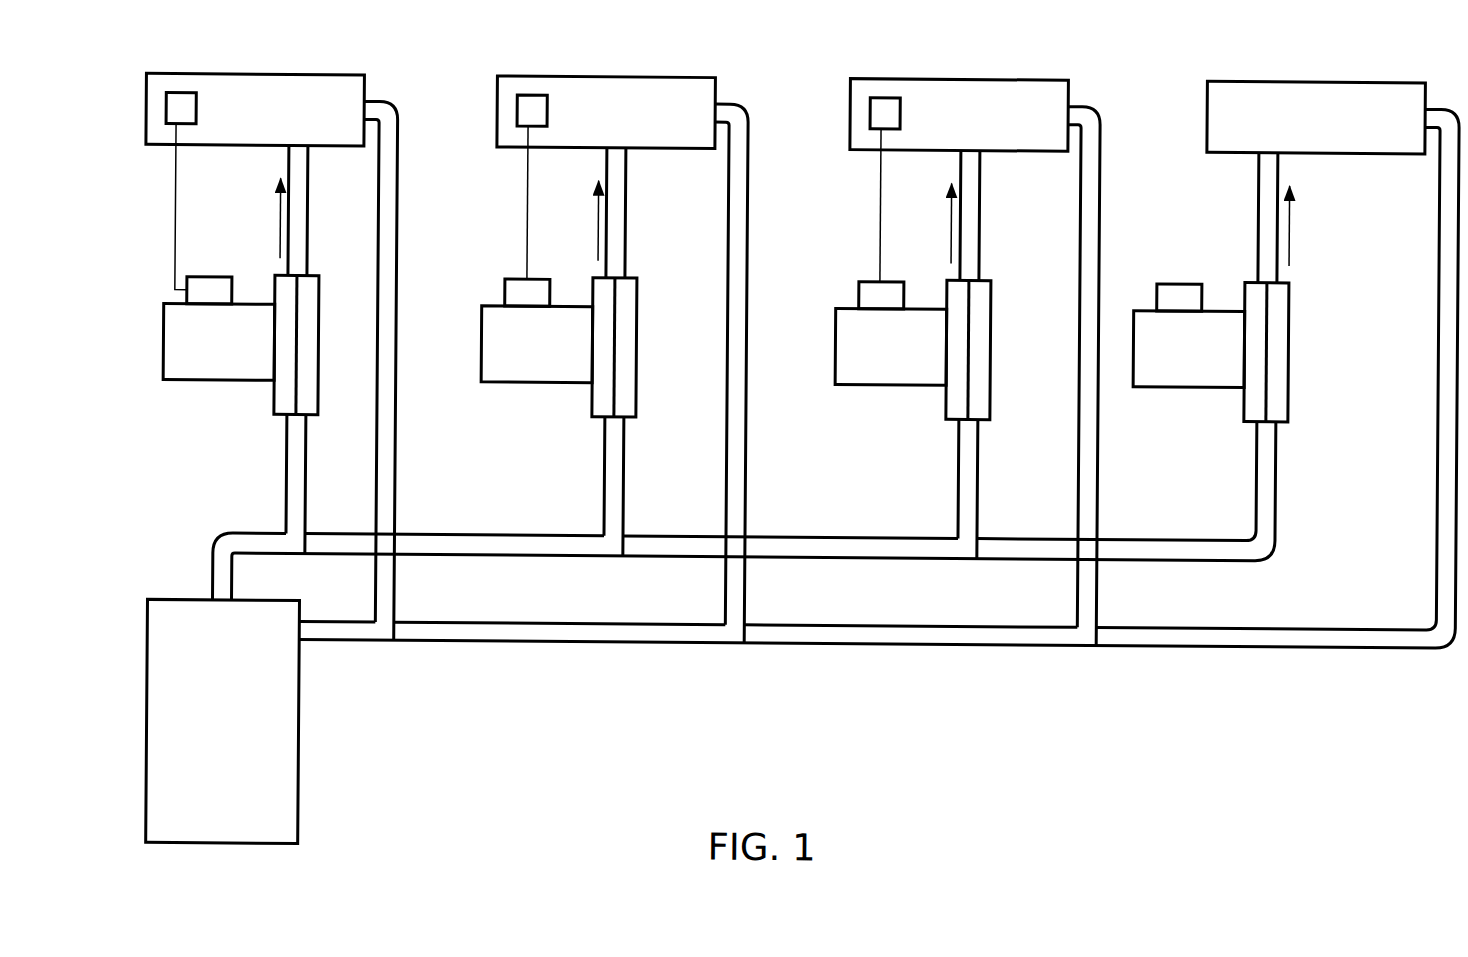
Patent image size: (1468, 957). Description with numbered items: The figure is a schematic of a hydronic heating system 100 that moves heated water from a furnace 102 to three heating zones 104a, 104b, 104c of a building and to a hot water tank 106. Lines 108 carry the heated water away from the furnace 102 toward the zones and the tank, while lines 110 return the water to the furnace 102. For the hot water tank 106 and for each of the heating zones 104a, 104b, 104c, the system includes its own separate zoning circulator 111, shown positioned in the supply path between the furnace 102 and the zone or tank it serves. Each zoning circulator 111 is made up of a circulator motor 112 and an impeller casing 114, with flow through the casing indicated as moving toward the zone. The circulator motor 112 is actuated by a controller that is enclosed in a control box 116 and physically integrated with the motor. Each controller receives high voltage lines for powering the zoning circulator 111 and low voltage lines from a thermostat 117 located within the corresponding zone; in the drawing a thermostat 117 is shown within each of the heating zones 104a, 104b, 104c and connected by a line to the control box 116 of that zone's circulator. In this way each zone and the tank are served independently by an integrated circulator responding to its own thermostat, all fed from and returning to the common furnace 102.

The hydronic heating system 100 is at (785, 458).
The furnace 102 is at (246, 707).
The heating zone 104a is at (335, 89).
The heating zone 104b is at (687, 90).
The heating zone 104c is at (1047, 86).
The hot water tank 106 is at (1320, 126).
The lines 108 is at (303, 497).
The lines 110 is at (395, 269).
The zoning circulator 111 is at (745, 349).
The circulator motor 112 is at (182, 367).
The impeller casing 114 is at (305, 321).
The control box 116 is at (203, 290).
The thermostat 117 is at (165, 125).